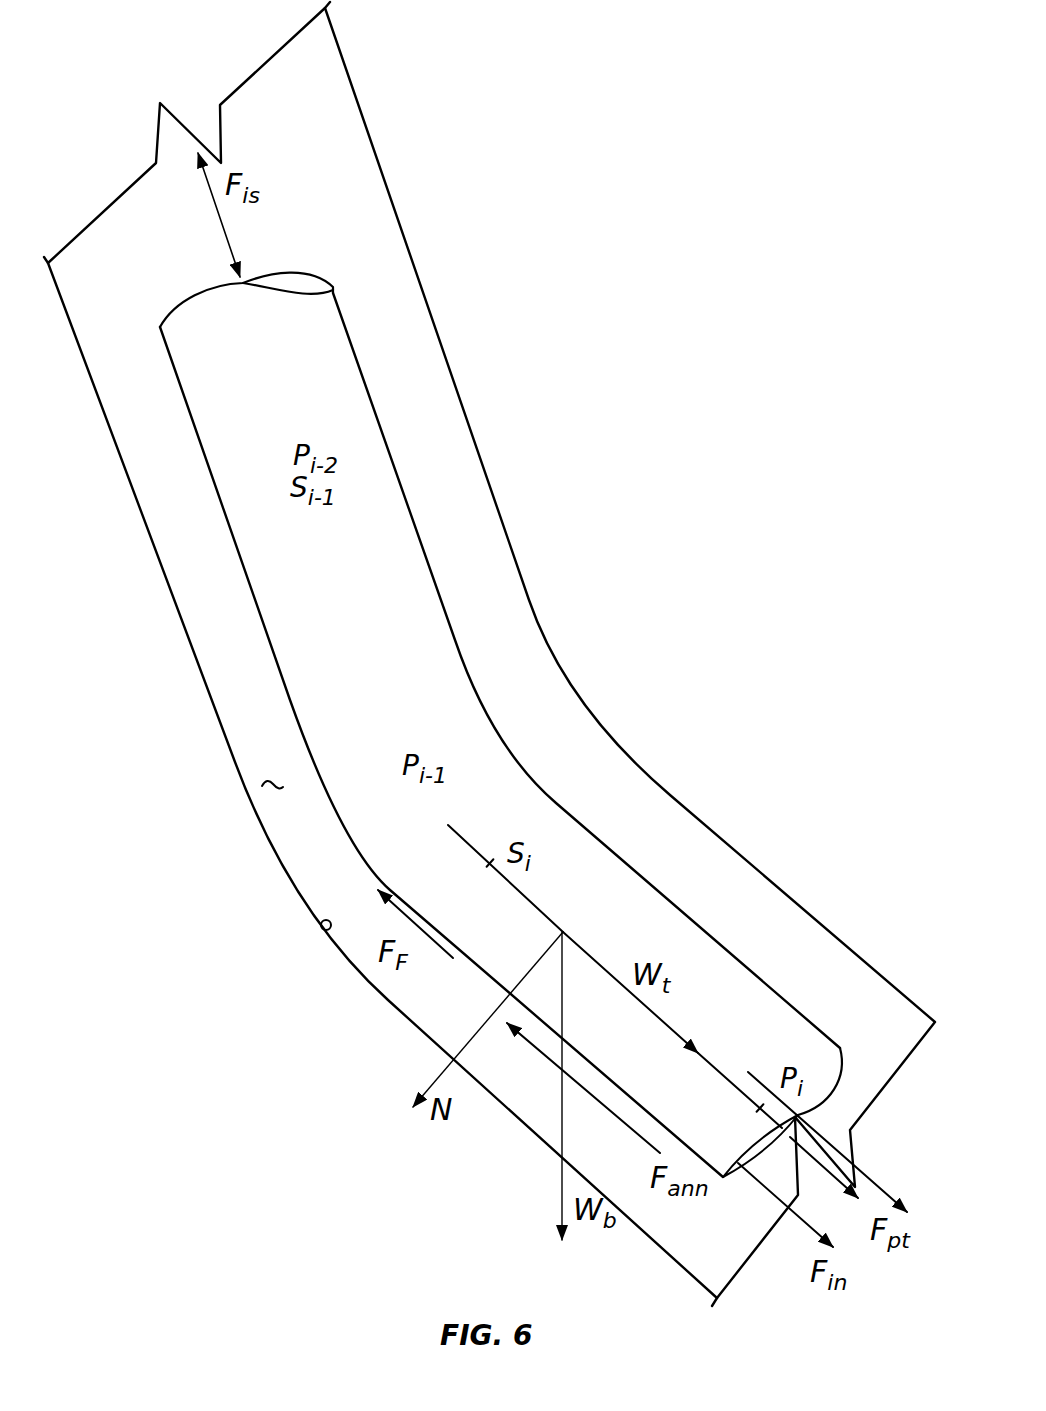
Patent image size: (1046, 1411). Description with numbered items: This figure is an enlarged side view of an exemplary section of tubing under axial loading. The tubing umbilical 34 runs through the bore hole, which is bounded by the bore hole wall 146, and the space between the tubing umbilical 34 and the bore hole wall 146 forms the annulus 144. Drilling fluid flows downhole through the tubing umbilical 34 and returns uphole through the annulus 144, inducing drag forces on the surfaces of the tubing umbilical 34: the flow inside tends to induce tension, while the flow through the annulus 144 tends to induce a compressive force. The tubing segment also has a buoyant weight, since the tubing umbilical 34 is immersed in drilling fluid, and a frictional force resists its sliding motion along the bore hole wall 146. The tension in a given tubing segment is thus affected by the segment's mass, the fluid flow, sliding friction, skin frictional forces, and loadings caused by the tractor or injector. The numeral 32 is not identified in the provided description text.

The casing / wellbore 32 is at (618, 752).
The tubing umbilical 34 is at (422, 540).
The annulus 144 is at (265, 784).
The bore hole wall 146 is at (323, 931).